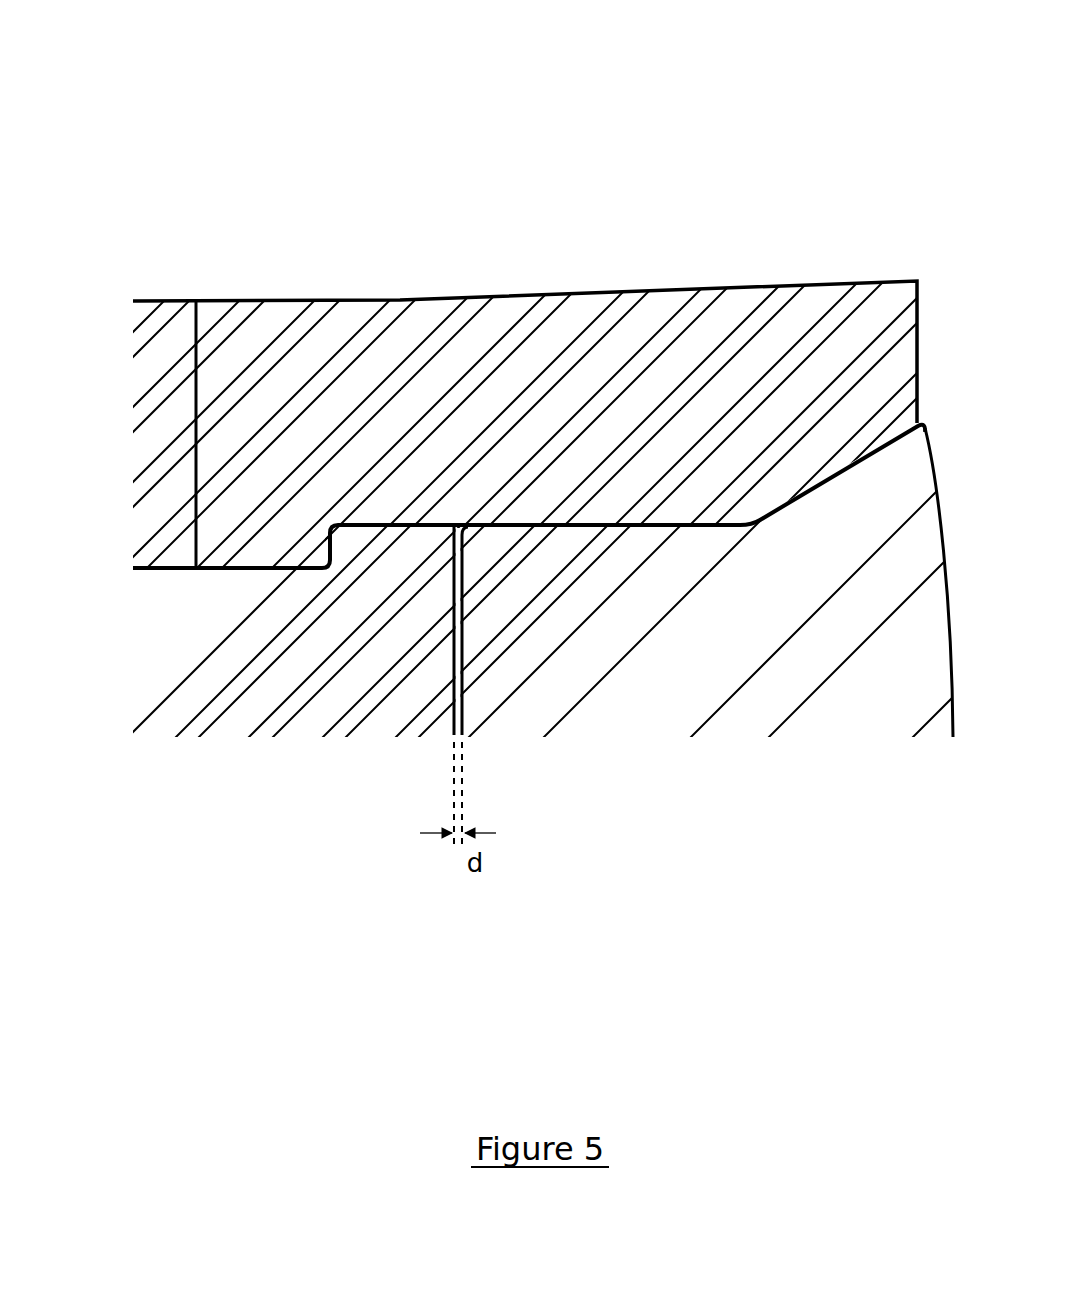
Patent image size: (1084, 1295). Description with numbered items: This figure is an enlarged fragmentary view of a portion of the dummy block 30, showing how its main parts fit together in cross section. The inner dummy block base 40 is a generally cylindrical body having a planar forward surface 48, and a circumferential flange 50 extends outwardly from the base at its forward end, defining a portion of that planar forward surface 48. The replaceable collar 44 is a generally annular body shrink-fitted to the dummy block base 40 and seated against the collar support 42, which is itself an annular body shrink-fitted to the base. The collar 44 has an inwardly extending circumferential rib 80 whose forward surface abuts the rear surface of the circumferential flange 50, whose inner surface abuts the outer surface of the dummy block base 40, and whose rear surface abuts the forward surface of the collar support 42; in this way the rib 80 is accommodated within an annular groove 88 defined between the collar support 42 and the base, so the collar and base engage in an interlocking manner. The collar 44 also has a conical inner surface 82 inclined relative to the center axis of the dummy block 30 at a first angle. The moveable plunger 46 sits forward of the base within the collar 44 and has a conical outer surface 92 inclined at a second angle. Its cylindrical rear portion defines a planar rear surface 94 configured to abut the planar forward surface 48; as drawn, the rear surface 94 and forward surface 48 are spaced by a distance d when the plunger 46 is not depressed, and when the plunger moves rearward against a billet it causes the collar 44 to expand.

The dummy block 30 is at (877, 61).
The dummy block base 40 is at (172, 713).
The collar support 42 is at (170, 327).
The collar 44 is at (887, 296).
The plunger 46 is at (903, 700).
The planar forward surface 48 is at (450, 613).
The circumferential flange 50 is at (395, 547).
The circumferential rib 80 is at (263, 542).
The conical inner surface 82 is at (810, 537).
The annular groove 88 is at (238, 579).
The conical outer surface 92 is at (742, 478).
The planar rear surface 94 is at (463, 633).